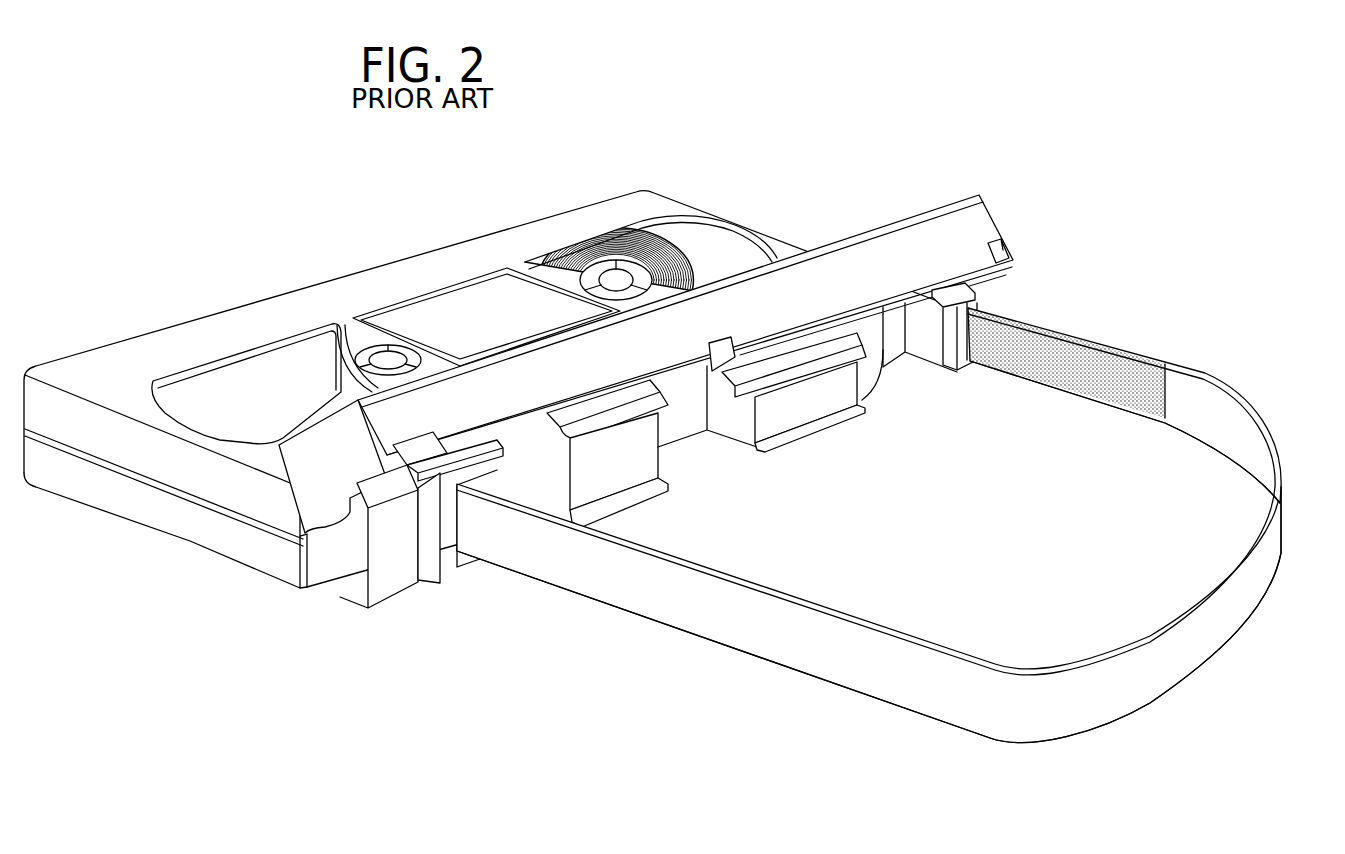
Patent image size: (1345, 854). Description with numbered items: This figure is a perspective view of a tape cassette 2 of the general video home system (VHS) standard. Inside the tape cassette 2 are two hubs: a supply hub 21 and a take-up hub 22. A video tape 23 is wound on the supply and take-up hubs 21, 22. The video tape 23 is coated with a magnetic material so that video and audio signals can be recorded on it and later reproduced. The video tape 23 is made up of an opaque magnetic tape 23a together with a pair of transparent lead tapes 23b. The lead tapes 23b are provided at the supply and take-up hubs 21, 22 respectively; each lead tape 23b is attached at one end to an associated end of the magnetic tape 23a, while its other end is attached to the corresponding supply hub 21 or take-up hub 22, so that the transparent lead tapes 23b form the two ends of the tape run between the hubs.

The tape cassette 2 is at (518, 336).
The supply hub 21 is at (638, 230).
The take-up hub 22 is at (337, 327).
The video tape 23 is at (898, 503).
The opaque magnetic tape 23a is at (1133, 372).
The transparent lead tape 23b is at (842, 663).